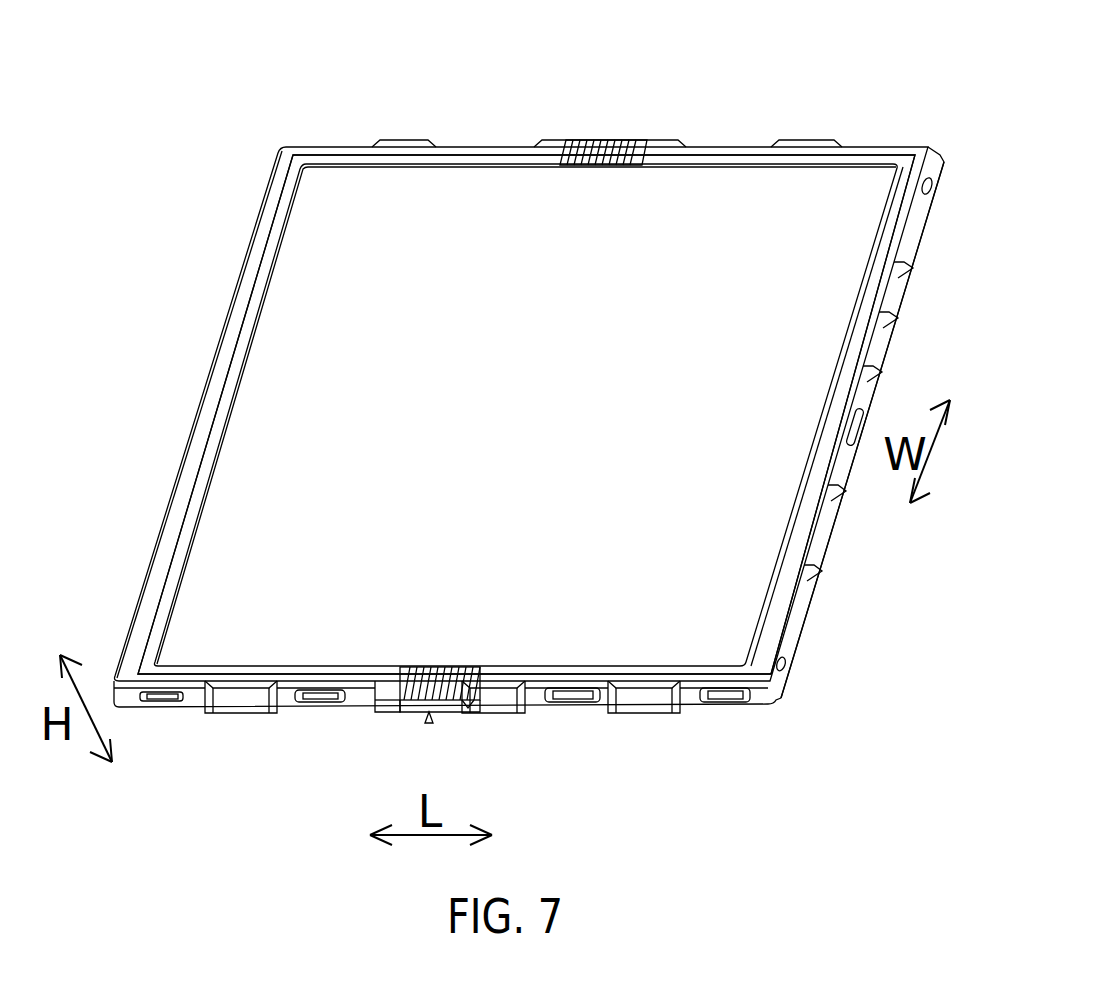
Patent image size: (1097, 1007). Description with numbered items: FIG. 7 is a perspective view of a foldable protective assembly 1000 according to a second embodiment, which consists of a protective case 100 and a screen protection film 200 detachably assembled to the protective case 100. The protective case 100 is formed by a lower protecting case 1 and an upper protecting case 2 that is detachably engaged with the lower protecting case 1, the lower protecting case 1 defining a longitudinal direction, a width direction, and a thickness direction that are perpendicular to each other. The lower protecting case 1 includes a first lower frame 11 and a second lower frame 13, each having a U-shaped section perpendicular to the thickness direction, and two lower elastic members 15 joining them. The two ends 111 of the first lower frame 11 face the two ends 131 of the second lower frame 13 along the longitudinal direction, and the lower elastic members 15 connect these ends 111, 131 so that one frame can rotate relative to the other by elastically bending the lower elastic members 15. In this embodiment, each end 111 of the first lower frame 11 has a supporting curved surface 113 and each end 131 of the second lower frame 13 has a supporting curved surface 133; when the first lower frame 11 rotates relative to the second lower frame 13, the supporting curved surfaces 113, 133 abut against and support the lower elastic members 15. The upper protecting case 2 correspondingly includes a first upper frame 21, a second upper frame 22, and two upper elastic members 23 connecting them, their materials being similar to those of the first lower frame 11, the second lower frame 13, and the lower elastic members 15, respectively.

The foldable protective assembly 1000 is at (180, 51).
The protective case 100 is at (892, 69).
The lower protecting case 1 is at (940, 170).
The upper protecting case 2 is at (886, 150).
The screen protection film 200 is at (285, 344).
The first lower frame 11 is at (248, 706).
The ends of the first lower frame 111 is at (393, 705).
The supporting curved surface 113 is at (428, 718).
The second lower frame 13 is at (637, 706).
The ends of the second lower frame 131 is at (493, 706).
The supporting curved surface 133 is at (455, 700).
The lower elastic member 15 is at (442, 701).
The first upper frame 21 is at (236, 680).
The second upper frame 22 is at (637, 680).
The upper elastic member 23 is at (418, 681).